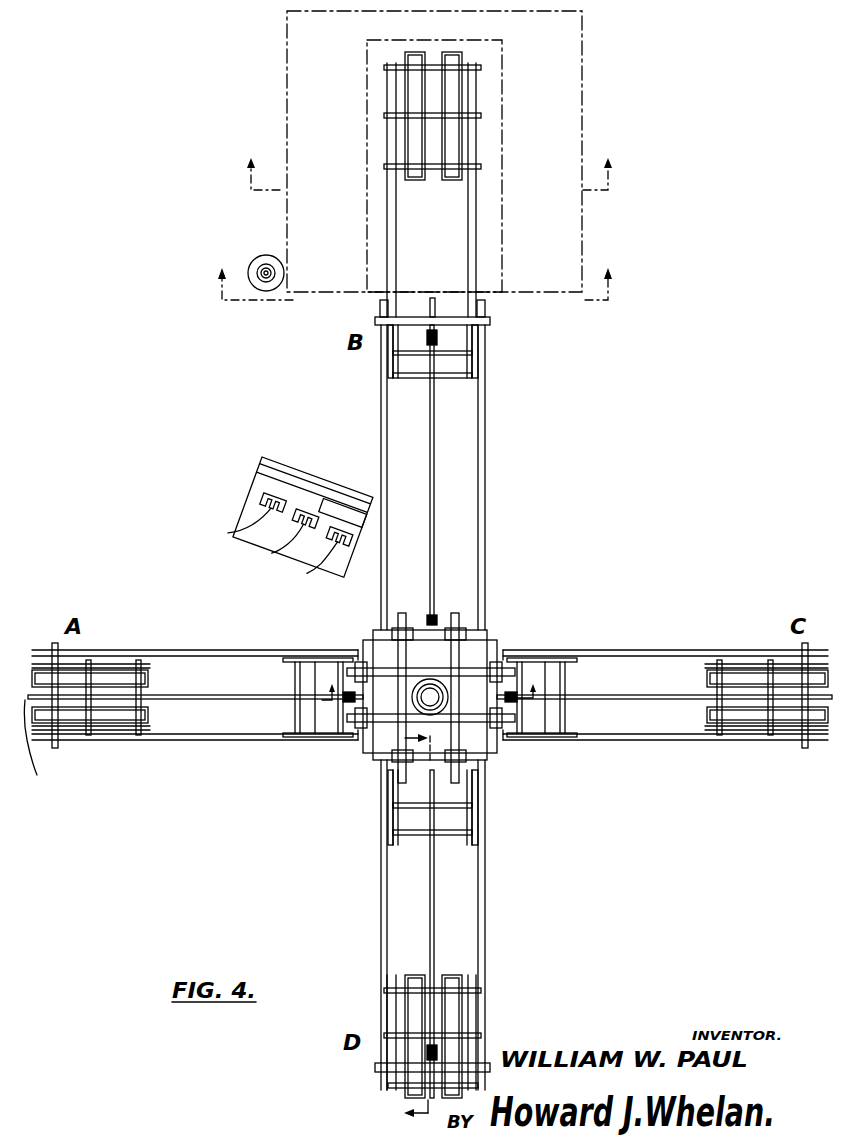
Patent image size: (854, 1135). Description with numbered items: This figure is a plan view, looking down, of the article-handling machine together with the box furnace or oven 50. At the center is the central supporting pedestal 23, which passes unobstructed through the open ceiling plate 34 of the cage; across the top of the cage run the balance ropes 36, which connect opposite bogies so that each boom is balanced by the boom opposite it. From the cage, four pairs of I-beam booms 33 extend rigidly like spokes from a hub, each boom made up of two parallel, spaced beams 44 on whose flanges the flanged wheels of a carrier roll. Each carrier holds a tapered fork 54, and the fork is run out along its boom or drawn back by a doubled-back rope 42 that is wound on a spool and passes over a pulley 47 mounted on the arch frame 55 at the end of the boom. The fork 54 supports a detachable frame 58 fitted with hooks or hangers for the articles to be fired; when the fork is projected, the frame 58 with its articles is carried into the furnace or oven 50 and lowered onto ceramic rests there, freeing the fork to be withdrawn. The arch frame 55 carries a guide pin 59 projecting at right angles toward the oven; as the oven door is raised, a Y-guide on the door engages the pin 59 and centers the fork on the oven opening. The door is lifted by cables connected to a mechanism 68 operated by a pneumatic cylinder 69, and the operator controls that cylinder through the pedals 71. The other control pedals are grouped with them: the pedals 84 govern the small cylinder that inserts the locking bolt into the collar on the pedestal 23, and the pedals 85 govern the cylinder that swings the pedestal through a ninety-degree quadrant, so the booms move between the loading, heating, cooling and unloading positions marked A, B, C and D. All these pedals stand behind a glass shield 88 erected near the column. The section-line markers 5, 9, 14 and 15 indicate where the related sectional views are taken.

The section line 5- 5 is at (404, 929).
The section line 9- 9 is at (430, 684).
The section line 14- 14 is at (429, 166).
The section line 15- 15 is at (413, 273).
The central supporting pedestal 23 is at (443, 697).
The I-beam booms 33 is at (380, 465).
The ceiling plate 34 is at (475, 650).
The balance ropes 36 is at (405, 669).
The rope 42 is at (434, 421).
The beams 44 is at (379, 422).
The pulley 47 is at (437, 338).
The furnace or oven 50 is at (287, 71).
The fork 54 is at (396, 290).
The arch frame 55 is at (411, 326).
The frame 58 is at (462, 118).
The guide pin 59 is at (432, 298).
The mechanism 68 is at (267, 272).
The pneumatic cylinder 69 is at (248, 332).
The pedals 71 is at (330, 559).
The pedals 84 is at (292, 545).
The pedals 85 is at (253, 528).
The glass shield 88 is at (308, 450).